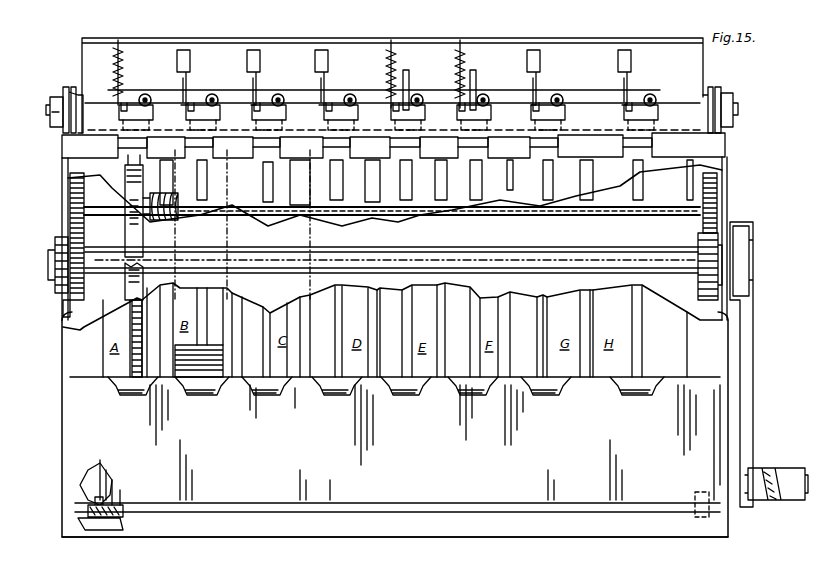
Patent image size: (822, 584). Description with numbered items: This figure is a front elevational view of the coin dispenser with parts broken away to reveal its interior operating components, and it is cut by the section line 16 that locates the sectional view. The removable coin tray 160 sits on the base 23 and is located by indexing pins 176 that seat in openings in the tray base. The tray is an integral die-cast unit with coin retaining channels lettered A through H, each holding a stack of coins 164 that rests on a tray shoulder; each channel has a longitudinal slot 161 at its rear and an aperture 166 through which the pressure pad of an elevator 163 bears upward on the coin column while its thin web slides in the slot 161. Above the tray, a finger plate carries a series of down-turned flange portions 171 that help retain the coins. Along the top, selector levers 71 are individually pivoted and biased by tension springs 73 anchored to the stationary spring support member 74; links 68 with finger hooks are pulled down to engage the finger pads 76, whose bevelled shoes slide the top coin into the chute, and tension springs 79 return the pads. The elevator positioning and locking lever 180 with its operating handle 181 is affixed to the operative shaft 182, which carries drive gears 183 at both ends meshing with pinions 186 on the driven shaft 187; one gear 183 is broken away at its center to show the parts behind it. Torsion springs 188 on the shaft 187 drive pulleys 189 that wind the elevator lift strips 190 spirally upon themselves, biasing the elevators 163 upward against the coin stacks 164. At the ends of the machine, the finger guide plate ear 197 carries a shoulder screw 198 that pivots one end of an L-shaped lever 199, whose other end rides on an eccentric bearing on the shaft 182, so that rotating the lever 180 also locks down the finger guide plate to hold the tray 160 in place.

The section line 16- 16 is at (130, 65).
The base 23 is at (256, 530).
The link 68 is at (410, 80).
The selector lever 71 is at (190, 90).
The tension spring 73 is at (394, 72).
The spring support member 74 is at (373, 40).
The finger pad 76 is at (412, 122).
The tension spring 79 is at (215, 95).
The coin tray 160 is at (52, 429).
The longitudinal slot 161 is at (135, 318).
The elevator 163 is at (122, 396).
The stack of coins 164 is at (210, 380).
The aperture 166 is at (139, 402).
The down-turned flange portion 171 is at (734, 146).
The indexing pin 176 is at (110, 498).
The locking lever 180 is at (753, 338).
The operating handle 181 is at (787, 466).
The operative shaft 182 is at (652, 255).
The drive gear 183 is at (66, 310).
The pinion 186 is at (70, 222).
The driven shaft 187 is at (550, 207).
The torsion spring 188 is at (178, 215).
The pulley 189 is at (125, 228).
The elevator lift strip 190 is at (126, 290).
The finger guide plate ear 197 is at (78, 92).
The shoulder screw 198 is at (52, 100).
The L-shaped lever 199 is at (64, 174).